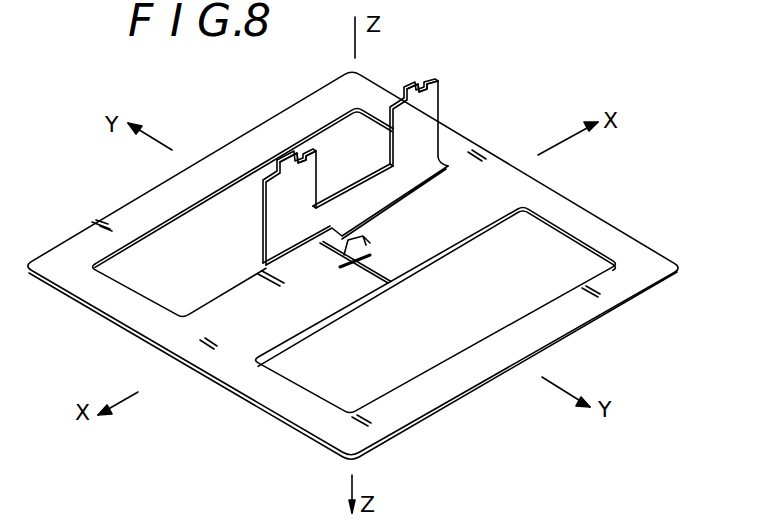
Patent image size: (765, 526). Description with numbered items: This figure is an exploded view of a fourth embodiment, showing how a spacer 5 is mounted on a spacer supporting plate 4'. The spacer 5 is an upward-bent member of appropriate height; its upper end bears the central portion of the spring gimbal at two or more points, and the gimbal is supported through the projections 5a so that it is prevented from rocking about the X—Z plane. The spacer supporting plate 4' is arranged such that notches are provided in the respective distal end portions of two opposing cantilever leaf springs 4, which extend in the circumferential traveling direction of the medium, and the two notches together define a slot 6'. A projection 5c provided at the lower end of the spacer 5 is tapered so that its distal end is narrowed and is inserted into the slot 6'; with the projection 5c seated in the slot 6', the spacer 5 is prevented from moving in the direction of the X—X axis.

The cantilever leaf spring 4 is at (353, 265).
The spacer supporting plate 4' is at (652, 315).
The spacer 5 is at (343, 149).
The projections 5a is at (283, 157).
The projection 5c is at (352, 218).
The slot 6' is at (331, 269).